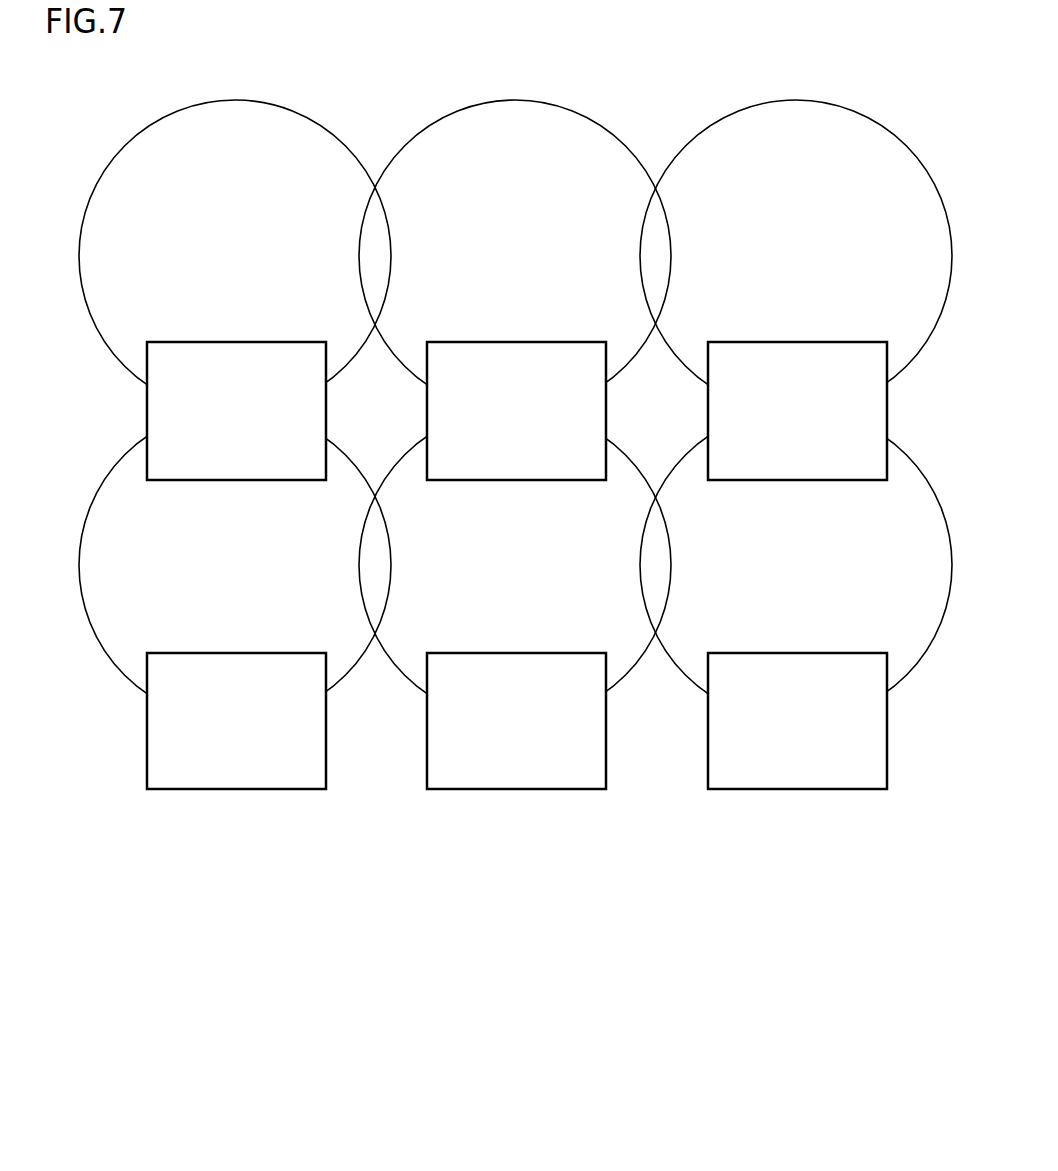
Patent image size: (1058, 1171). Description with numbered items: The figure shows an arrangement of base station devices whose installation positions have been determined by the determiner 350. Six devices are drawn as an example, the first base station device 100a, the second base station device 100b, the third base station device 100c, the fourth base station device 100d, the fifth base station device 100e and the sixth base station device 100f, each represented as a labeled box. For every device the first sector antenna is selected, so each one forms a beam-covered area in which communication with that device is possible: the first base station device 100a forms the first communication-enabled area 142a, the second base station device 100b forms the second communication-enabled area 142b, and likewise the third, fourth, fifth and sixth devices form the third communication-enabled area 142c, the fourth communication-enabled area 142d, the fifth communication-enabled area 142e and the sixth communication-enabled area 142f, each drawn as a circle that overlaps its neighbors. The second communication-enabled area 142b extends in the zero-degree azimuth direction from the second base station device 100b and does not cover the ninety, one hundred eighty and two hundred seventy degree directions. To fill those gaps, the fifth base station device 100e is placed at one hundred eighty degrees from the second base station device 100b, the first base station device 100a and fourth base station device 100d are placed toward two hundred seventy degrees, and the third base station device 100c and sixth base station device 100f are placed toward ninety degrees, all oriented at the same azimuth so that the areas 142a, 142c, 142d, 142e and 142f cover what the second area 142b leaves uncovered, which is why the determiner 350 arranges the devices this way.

The first base station device 100a is at (268, 342).
The second base station device 100b is at (548, 342).
The third base station device 100c is at (829, 342).
The fourth base station device 100d is at (267, 653).
The fifth base station device 100e is at (547, 653).
The sixth base station device 100f is at (828, 653).
The first communication-enabled area 142a is at (272, 128).
The second communication-enabled area 142b is at (552, 128).
The third communication-enabled area 142c is at (833, 128).
The fourth communication-enabled area 142d is at (355, 640).
The fifth communication-enabled area 142e is at (636, 640).
The sixth communication-enabled area 142f is at (916, 640).
The determiner 350 is at (517, 533).